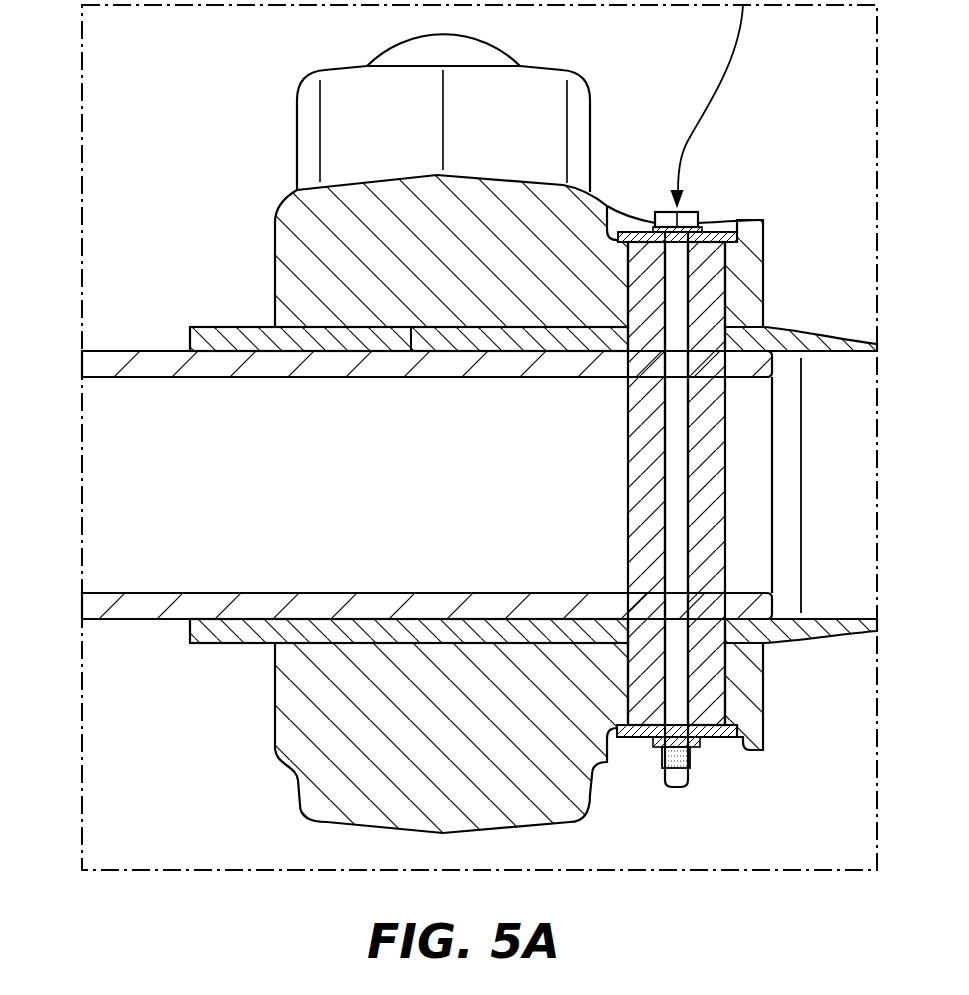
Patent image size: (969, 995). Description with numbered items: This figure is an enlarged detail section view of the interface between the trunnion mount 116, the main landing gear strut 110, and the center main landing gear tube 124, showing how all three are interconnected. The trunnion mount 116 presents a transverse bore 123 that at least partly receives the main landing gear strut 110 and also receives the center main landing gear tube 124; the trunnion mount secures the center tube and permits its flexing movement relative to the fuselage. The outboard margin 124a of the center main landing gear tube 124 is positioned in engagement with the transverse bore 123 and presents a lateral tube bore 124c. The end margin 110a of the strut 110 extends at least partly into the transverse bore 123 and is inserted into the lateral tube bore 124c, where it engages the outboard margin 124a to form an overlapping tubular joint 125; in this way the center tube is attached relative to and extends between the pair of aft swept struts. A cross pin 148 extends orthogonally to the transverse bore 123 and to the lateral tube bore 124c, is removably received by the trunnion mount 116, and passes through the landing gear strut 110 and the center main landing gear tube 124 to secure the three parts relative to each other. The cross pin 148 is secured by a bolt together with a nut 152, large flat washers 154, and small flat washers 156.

The main landing gear strut 110 is at (155, 622).
The end margin 110a is at (268, 620).
The trunnion mount 116 is at (367, 828).
The transverse bore 123 is at (411, 350).
The center main landing gear tube 124 is at (790, 327).
The outboard margin 124a is at (218, 327).
The lateral tube bore 124c is at (518, 351).
The overlapping tubular joint 125 is at (274, 570).
The cross pin 148 is at (722, 278).
The nut 152 is at (657, 758).
The large flat washer 154 is at (743, 238).
The small flat washer 156 is at (707, 230).